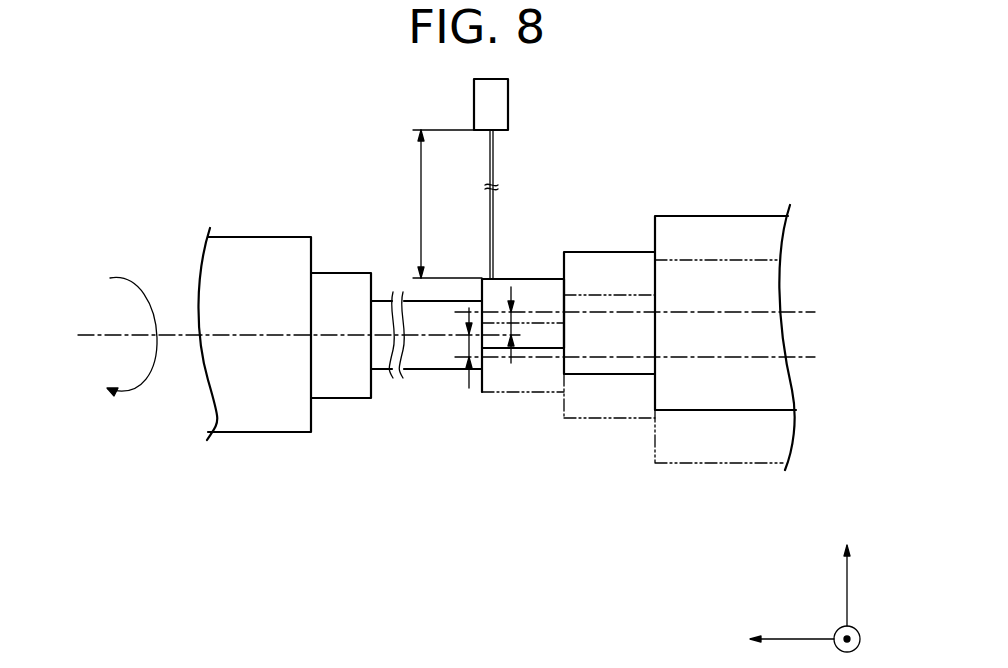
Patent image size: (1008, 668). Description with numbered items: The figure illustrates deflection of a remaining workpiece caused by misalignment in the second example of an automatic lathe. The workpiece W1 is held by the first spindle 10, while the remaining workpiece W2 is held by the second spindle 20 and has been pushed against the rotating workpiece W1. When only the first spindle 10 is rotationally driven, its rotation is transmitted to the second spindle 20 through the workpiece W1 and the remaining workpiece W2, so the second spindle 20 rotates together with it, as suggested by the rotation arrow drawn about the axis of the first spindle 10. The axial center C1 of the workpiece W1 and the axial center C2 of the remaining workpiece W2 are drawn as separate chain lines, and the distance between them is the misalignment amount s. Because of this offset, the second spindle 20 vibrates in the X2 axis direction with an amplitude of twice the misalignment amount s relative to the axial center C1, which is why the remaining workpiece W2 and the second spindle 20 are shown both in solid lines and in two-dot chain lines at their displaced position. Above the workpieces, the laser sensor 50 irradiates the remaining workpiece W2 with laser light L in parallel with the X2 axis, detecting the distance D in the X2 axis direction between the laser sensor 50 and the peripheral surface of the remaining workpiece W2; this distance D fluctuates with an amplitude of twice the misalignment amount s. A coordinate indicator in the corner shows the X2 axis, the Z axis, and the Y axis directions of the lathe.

The first spindle 10 is at (258, 257).
The second spindle 20 is at (742, 228).
The laser sensor 50 is at (508, 100).
The laser light L is at (494, 197).
The distance D is at (440, 204).
The workpiece W1 is at (422, 358).
The remaining workpiece W2 is at (550, 338).
The misalignment amount s is at (470, 347).
The axial center of the workpiece W1 C1 is at (93, 333).
The axial center of the remaining workpiece W2 C2 is at (807, 312).
The X2 axis X2 is at (848, 572).
The Z axis Z is at (781, 643).
The Y axis Y is at (859, 644).